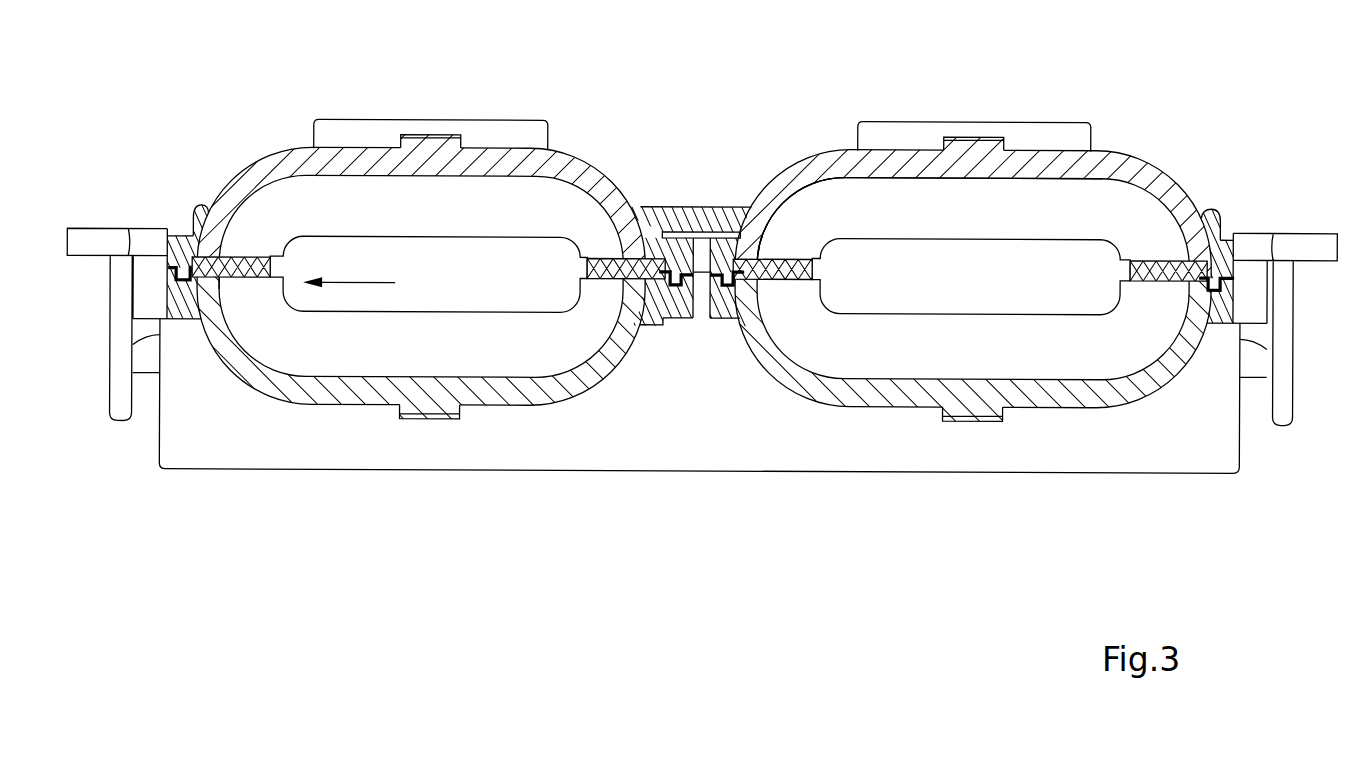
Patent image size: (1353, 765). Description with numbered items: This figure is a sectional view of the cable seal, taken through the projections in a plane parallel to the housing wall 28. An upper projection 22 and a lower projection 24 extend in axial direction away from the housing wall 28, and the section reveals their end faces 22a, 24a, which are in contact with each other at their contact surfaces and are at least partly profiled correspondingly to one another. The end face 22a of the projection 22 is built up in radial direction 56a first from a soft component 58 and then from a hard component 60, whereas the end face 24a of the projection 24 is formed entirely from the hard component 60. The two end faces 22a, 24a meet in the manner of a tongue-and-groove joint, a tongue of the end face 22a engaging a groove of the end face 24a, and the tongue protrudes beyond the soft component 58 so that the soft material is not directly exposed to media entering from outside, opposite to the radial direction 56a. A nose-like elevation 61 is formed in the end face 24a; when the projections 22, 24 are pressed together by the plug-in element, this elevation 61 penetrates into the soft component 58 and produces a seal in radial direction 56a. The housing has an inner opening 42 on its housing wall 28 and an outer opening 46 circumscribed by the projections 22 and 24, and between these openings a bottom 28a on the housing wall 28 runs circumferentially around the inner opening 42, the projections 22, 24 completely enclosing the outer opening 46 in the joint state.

The projection 22 is at (282, 169).
The end face 22a is at (170, 249).
The projection 24 is at (285, 389).
The end face 24a is at (176, 264).
The housing wall 28 is at (340, 442).
The bottom 28a is at (907, 207).
The inner opening 42 is at (990, 295).
The outer opening 46 is at (838, 198).
The radial direction 56a is at (349, 270).
The soft component 58 is at (245, 264).
The hard component 60 is at (183, 262).
The elevation 61 is at (217, 297).